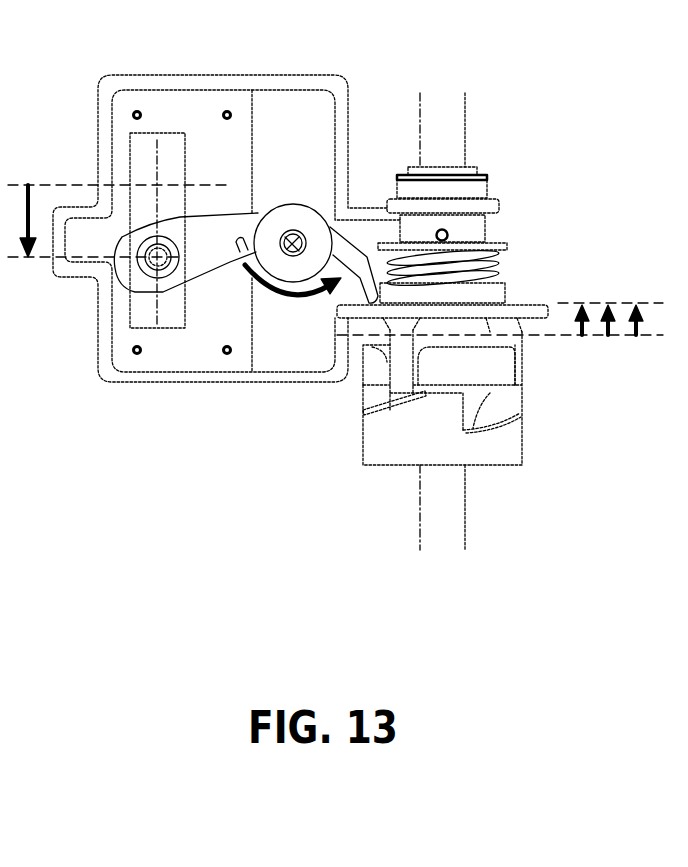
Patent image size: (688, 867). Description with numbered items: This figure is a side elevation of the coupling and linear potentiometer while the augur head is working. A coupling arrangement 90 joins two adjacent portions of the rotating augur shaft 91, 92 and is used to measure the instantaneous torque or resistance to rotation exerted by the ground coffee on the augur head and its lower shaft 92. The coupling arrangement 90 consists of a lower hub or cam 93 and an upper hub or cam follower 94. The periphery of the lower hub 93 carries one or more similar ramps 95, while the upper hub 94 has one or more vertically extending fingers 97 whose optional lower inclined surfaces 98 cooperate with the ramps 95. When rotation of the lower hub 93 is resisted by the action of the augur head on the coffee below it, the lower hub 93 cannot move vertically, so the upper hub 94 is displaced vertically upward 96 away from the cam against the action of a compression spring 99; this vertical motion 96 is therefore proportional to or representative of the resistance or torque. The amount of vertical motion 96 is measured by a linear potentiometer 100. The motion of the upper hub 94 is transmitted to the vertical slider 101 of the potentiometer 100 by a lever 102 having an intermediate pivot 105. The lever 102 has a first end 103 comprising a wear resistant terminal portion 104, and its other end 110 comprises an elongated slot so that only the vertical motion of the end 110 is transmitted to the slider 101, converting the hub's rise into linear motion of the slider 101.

The coupling arrangement 90 is at (606, 272).
The upper portion of the rotating augur shaft 91 is at (453, 122).
The lower augur shaft 92 is at (438, 502).
The lower hub or cam 93 is at (487, 452).
The upper hub or cam follower 94 is at (493, 288).
The ramps 95 is at (407, 395).
The vertical upward displacement 96 is at (647, 327).
The vertically extending fingers 97 is at (398, 383).
The lower inclined surfaces 98 is at (397, 397).
The compression spring 99 is at (467, 262).
The linear potentiometer 100 is at (150, 305).
The vertical slider 101 is at (153, 253).
The lever 102 is at (200, 233).
The first end of the lever 103 is at (143, 267).
The wear resistant terminal portion 104 is at (367, 273).
The intermediate pivot 105 is at (293, 243).
The other end of the lever 110 is at (130, 157).